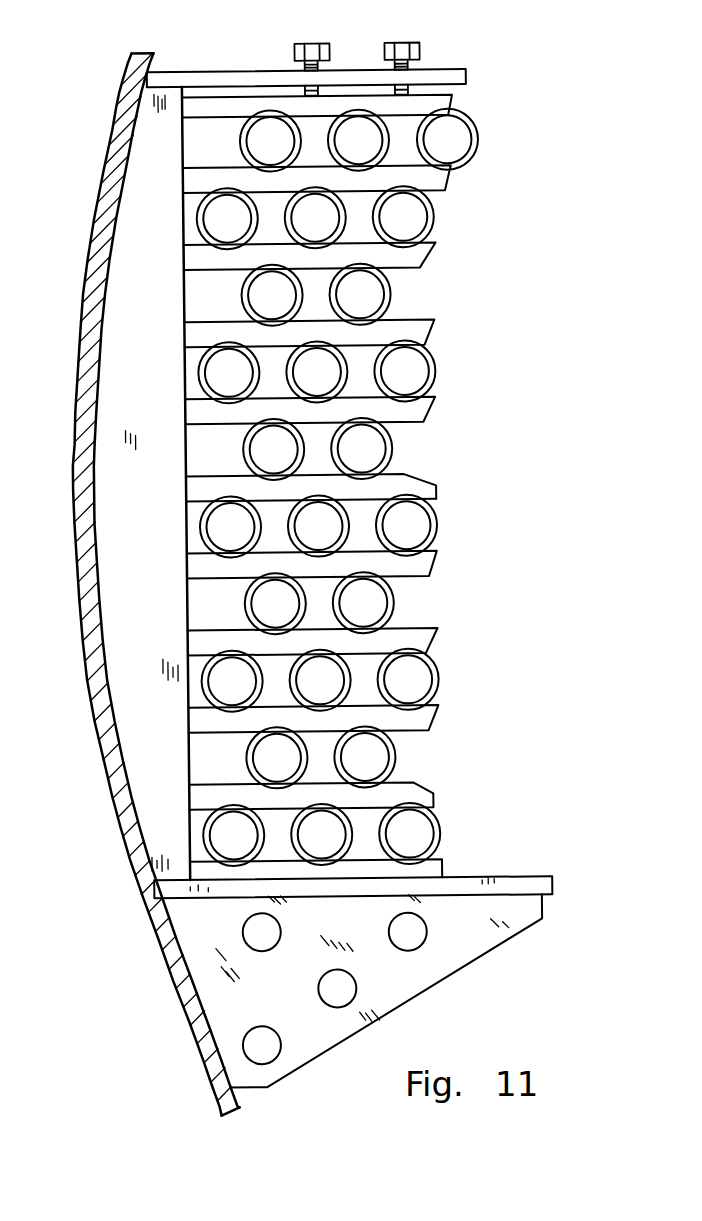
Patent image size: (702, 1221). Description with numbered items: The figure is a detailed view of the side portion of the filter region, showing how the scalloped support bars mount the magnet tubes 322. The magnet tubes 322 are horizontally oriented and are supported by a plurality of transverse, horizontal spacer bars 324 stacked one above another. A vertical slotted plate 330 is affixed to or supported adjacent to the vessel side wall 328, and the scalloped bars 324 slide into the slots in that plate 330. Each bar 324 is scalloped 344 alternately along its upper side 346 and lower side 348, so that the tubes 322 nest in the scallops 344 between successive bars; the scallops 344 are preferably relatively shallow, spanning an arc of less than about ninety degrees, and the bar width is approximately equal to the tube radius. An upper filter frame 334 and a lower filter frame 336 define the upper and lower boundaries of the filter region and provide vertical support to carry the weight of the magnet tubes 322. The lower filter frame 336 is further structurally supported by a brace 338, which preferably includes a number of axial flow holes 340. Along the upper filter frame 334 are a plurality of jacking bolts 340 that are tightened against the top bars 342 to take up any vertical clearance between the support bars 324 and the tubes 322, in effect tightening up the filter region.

The magnet tubes 322 is at (447, 525).
The spacer bars 324 is at (347, 404).
The vessel side wall 328 is at (140, 585).
The vertical slotted plate 330 is at (110, 483).
The upper filter frame 334 is at (306, 57).
The lower filter frame 336 is at (363, 864).
The brace 338 is at (384, 990).
The jacking bolts 340 is at (374, 524).
The top bars 342 is at (360, 111).
The scallops 344 is at (421, 447).
The upper side of the bar 346 is at (329, 474).
The lower side of the bar 348 is at (352, 487).